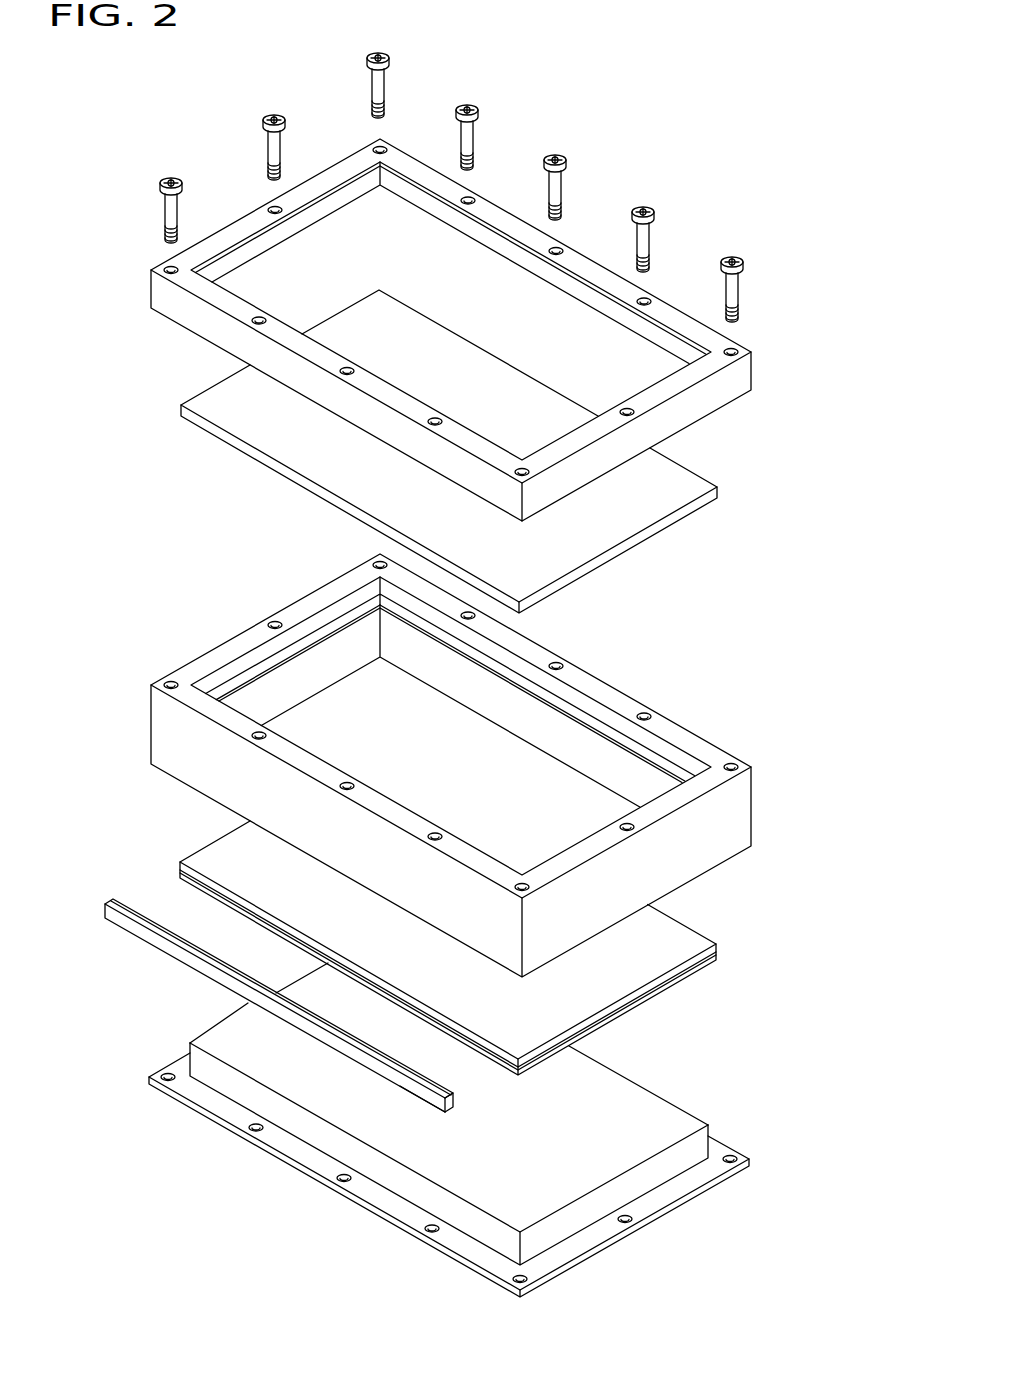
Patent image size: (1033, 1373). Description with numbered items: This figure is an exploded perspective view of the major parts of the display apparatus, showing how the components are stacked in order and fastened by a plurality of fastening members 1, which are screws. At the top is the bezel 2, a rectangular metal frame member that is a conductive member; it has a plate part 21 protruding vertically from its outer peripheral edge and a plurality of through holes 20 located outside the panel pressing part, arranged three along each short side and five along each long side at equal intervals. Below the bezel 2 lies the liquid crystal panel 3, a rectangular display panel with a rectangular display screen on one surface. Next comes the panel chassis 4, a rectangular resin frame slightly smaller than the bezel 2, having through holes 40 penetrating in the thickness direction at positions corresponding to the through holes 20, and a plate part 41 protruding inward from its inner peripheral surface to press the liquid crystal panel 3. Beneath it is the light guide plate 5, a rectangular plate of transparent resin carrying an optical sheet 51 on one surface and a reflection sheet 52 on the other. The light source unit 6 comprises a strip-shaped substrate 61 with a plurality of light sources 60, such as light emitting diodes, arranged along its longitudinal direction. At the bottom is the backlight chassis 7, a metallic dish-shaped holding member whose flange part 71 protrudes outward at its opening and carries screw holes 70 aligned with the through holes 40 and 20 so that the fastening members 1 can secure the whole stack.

The fastening member 1 is at (166, 178).
The bezel 2 is at (148, 269).
The through hole 20 is at (263, 313).
The plate part 21 is at (751, 374).
The liquid crystal panel 3 is at (688, 480).
The panel chassis 4 is at (693, 740).
The through hole 40 is at (268, 727).
The plate part 41 is at (538, 694).
The light guide plate 5 is at (477, 948).
The optical sheet 51 is at (680, 932).
The reflection sheet 52 is at (672, 988).
The light source unit 6 is at (118, 888).
The light source 60 is at (454, 1102).
The substrate 61 is at (434, 1104).
The backlight chassis 7 is at (670, 1113).
The screw hole 70 is at (246, 1133).
The flange part 71 is at (198, 1096).